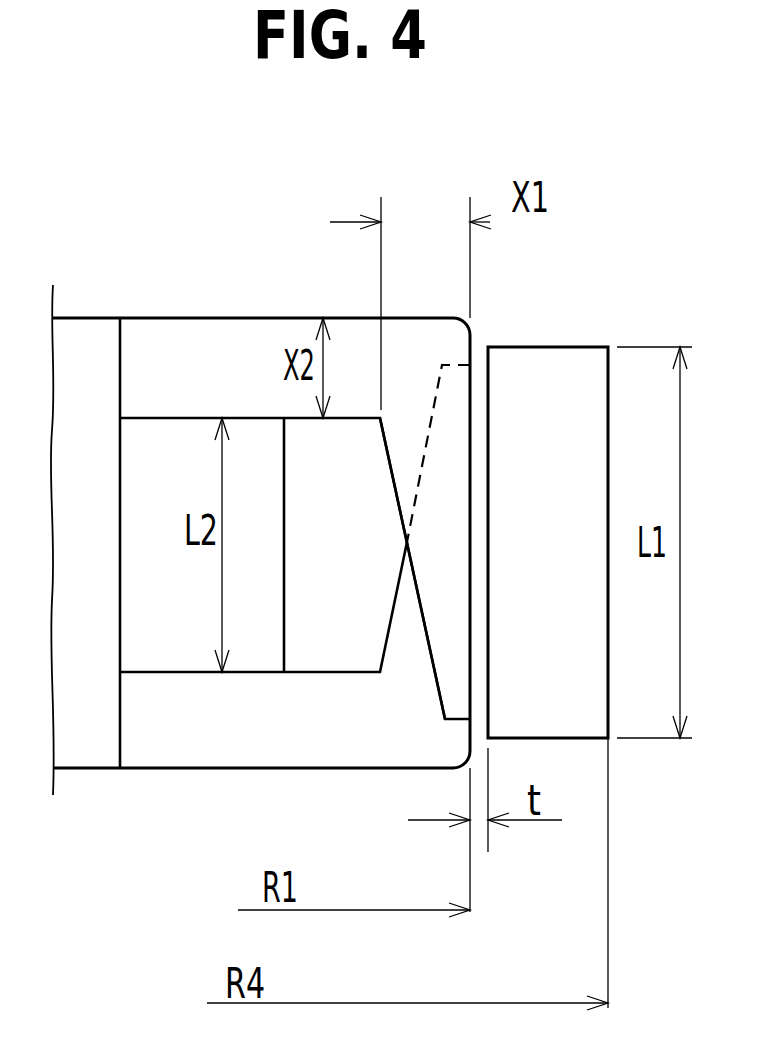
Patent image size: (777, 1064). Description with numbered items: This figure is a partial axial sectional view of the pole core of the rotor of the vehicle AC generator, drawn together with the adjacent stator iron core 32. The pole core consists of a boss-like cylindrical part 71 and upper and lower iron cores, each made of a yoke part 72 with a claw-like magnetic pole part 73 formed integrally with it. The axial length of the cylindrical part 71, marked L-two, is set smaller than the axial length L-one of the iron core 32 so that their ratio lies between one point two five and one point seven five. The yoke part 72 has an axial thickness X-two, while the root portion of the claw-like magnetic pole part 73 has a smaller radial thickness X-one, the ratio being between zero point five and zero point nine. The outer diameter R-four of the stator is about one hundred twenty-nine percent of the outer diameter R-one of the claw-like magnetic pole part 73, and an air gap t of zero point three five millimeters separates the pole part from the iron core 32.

The cylindrical part 71 is at (180, 648).
The yoke part 72 is at (346, 333).
The claw-like magnetic pole part 73 is at (453, 532).
The iron core 32 is at (545, 427).